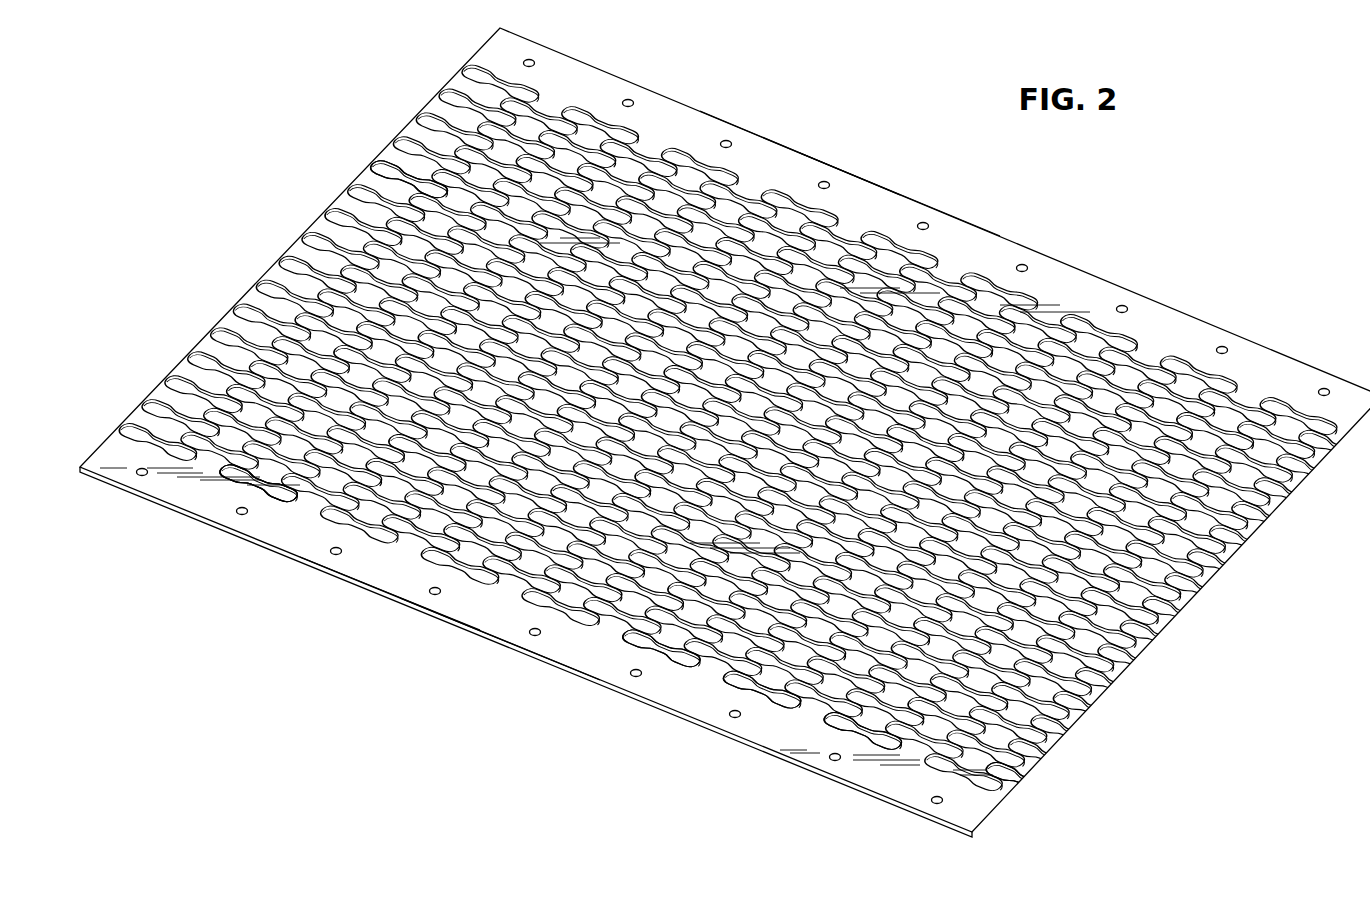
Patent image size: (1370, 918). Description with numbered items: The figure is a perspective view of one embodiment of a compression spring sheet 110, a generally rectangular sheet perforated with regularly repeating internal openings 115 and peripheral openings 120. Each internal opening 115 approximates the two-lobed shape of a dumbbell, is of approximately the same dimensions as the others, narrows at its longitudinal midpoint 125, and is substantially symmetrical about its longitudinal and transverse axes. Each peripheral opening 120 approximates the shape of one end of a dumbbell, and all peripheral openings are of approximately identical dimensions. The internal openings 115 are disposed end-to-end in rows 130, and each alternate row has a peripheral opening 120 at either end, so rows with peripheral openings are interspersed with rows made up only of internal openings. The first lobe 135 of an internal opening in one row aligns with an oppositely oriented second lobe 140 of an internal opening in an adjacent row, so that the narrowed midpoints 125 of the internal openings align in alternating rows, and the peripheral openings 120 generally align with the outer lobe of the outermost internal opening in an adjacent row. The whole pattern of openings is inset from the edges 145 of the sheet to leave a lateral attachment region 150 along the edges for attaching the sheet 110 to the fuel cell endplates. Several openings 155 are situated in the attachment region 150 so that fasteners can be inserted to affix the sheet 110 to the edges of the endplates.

The compression spring sheet 110 is at (1212, 220).
The internal openings 115 is at (725, 682).
The peripheral openings 120 is at (1021, 753).
The longitudinal midpoint 125 is at (950, 772).
The rows 130 is at (376, 166).
The first lobe 135 is at (230, 465).
The second lobe 140 is at (237, 477).
The edges 145 is at (795, 148).
The lateral attachment region 150 is at (884, 190).
The openings 155 is at (727, 140).